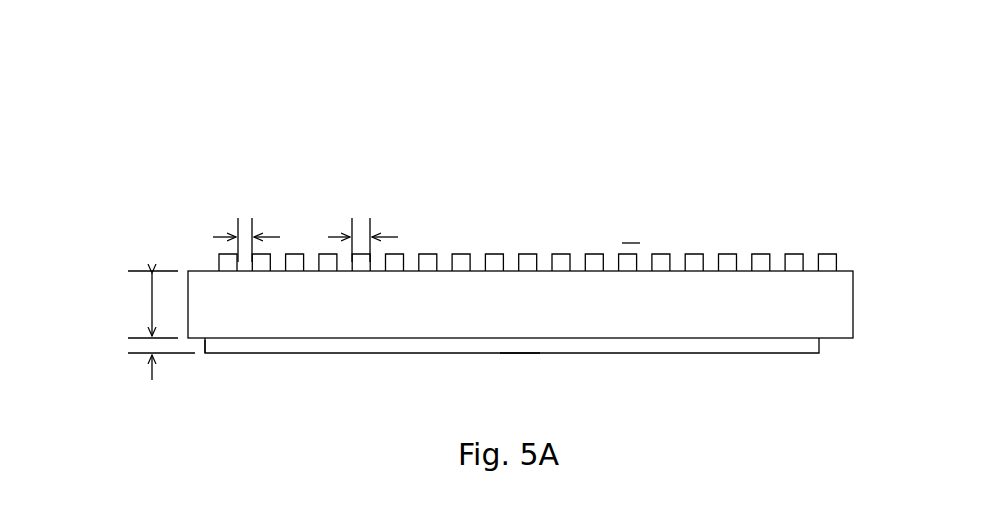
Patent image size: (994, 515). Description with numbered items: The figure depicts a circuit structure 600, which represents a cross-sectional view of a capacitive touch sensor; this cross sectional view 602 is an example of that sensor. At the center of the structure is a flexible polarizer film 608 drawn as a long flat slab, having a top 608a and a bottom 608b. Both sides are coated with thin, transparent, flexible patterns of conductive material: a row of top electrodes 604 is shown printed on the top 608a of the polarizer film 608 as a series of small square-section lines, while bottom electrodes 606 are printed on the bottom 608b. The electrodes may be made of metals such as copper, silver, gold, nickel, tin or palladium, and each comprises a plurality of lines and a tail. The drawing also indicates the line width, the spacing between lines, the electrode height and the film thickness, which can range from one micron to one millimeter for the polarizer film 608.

The circuit structure 600 is at (140, 110).
The cross sectional view 602 is at (450, 305).
The top electrodes 604 is at (793, 262).
The bottom electrodes 606 is at (240, 345).
The polarizer film 608 is at (783, 310).
The top side of polarizer film 608a is at (622, 243).
The bottom side of polarizer film 608b is at (523, 363).